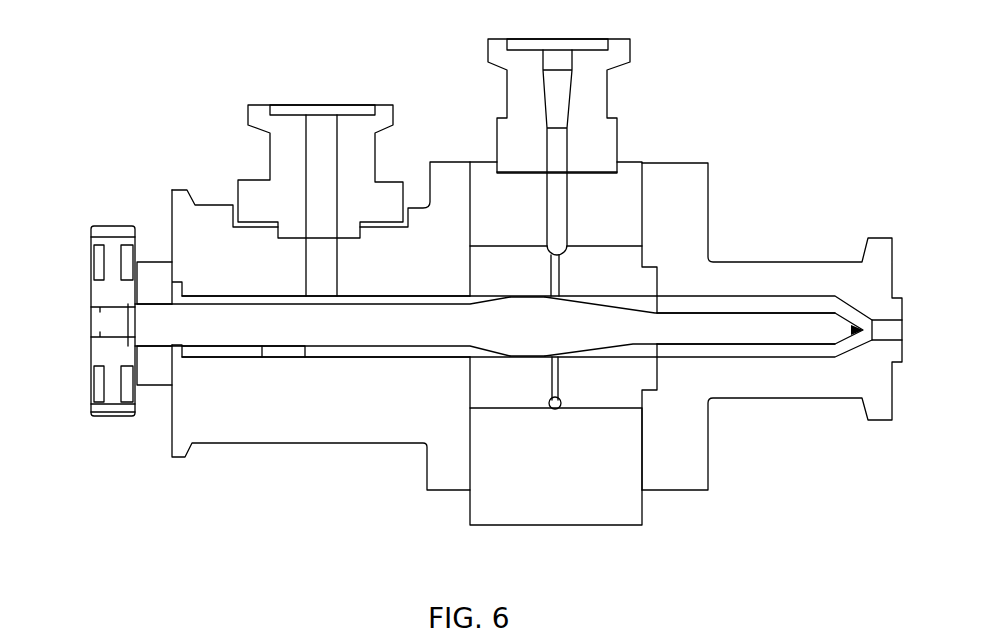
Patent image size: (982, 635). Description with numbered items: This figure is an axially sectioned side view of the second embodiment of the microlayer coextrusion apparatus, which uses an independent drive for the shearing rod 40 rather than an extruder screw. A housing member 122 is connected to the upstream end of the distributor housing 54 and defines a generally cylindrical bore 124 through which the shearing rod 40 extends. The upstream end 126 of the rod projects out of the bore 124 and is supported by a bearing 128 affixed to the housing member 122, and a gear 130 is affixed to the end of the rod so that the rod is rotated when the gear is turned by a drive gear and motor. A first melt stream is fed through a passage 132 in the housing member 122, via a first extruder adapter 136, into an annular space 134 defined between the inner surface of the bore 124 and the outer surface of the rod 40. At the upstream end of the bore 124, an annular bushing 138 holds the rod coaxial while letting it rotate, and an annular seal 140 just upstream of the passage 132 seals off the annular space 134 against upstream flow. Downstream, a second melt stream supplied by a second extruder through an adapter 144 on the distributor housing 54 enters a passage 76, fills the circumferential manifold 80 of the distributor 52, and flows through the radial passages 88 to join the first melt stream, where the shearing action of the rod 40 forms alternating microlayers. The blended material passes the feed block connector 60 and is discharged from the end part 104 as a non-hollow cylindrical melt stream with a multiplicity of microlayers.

The shearing rod 40 is at (672, 312).
The distributor 52 is at (505, 414).
The distributor housing 54 is at (615, 532).
The feed block connector 60 is at (750, 405).
The passage 76 is at (570, 205).
The manifold 80 is at (560, 410).
The radially extending passages 88 is at (562, 270).
The end part 104 is at (890, 330).
The housing member 122 is at (238, 448).
The bore 124 is at (345, 347).
The upstream end 126 is at (115, 312).
The bearing 128 is at (153, 262).
The gear 130 is at (122, 424).
The passage 132 is at (332, 270).
The annular space 134 is at (400, 350).
The first extruder adapter 136 is at (268, 148).
The annular bushing 138 is at (240, 352).
The annular seal 140 is at (283, 353).
The actuator 144 is at (505, 88).